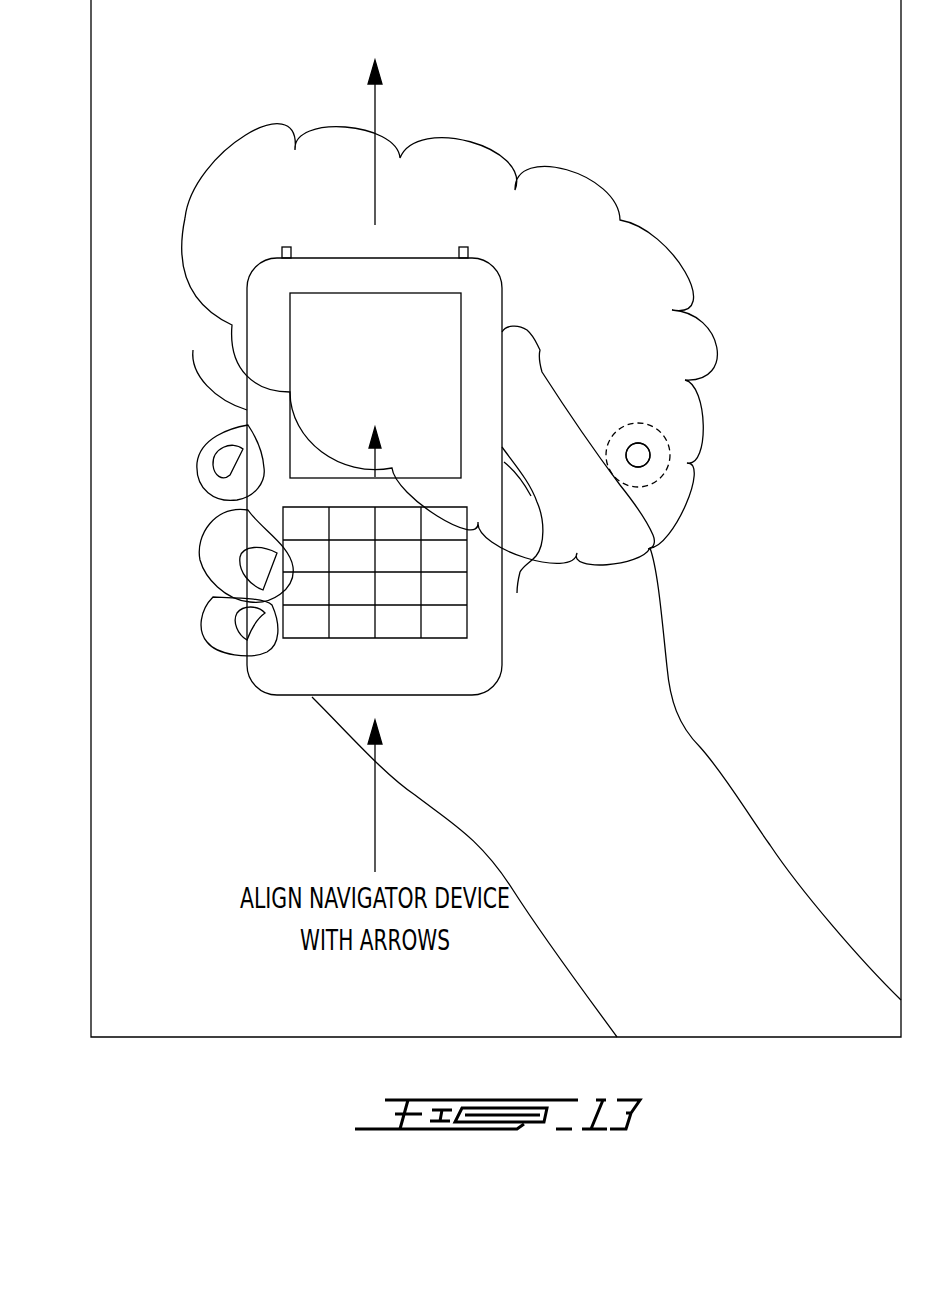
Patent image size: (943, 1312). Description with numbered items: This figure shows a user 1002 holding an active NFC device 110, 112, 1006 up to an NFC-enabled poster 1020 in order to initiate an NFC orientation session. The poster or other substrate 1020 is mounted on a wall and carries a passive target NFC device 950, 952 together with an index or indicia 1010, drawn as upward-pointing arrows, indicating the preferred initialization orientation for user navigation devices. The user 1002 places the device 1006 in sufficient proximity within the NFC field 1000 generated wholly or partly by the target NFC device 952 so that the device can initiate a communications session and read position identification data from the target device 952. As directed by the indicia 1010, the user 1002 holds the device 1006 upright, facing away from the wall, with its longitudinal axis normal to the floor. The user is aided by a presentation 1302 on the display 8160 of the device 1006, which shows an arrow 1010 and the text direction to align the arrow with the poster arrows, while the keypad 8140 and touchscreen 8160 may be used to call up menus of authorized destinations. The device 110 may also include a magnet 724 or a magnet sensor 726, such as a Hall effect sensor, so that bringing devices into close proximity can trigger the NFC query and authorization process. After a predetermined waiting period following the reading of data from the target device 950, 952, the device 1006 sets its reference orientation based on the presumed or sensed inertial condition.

The poster 1020 is at (91, 600).
The NFC field 1000 is at (652, 223).
The indicia 1010 is at (378, 178).
The device 110 is at (502, 663).
The active NFC device 112 is at (461, 536).
The active NFC device 1006 is at (303, 697).
The magnet 724 is at (286, 247).
The magnet sensor 726 is at (463, 247).
The presentation 1302 is at (305, 348).
The touchscreen 8160 is at (197, 465).
The keyboard/keypad 8140 is at (307, 623).
The user 1002 is at (705, 790).
The passive target NFC device 950 is at (690, 465).
The target NFC device 952 is at (737, 465).